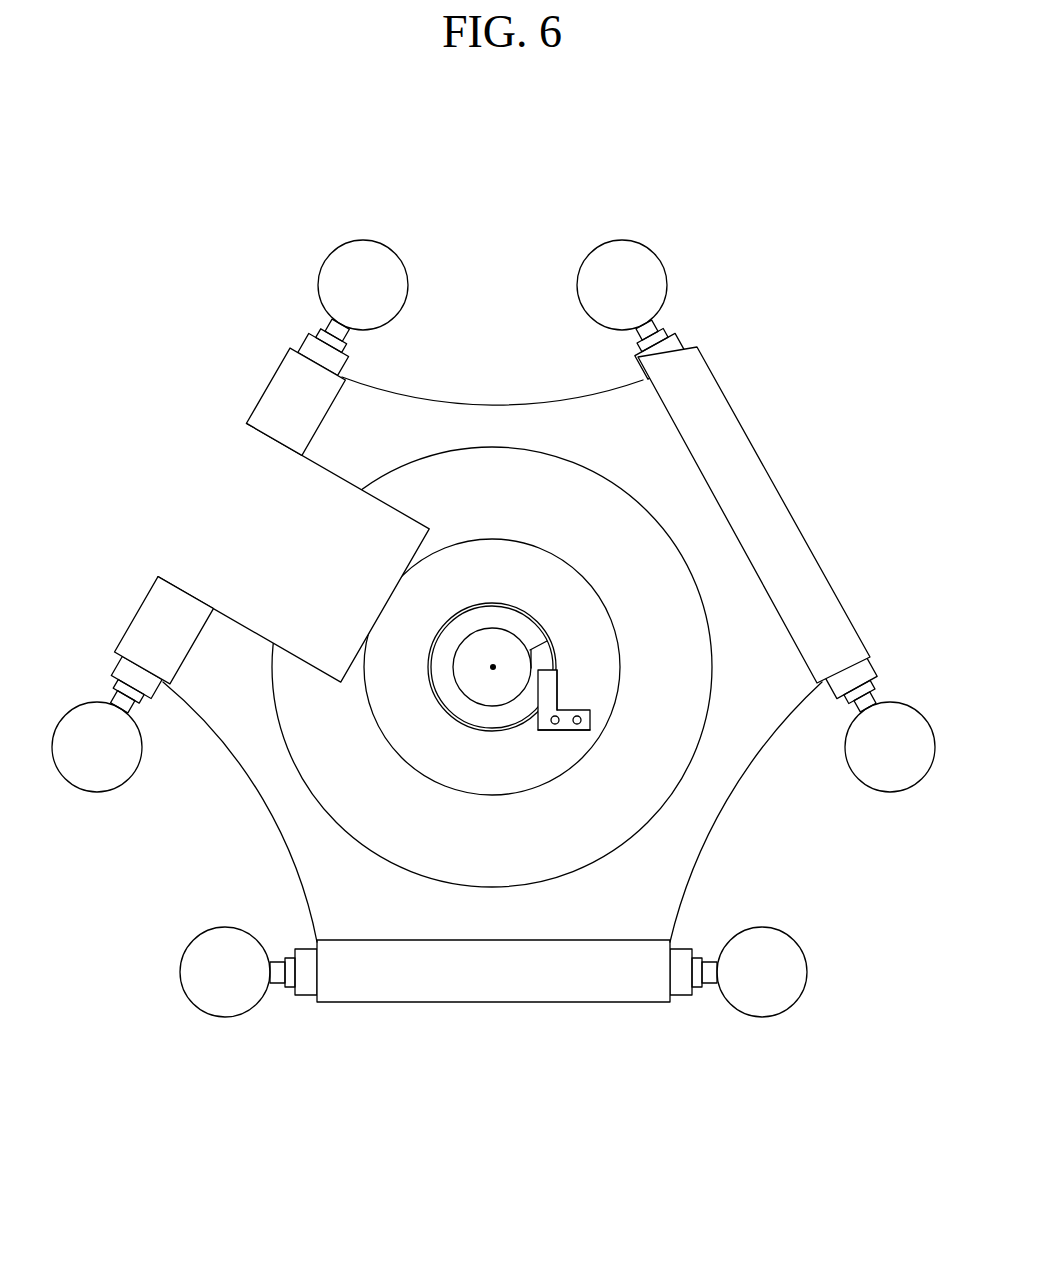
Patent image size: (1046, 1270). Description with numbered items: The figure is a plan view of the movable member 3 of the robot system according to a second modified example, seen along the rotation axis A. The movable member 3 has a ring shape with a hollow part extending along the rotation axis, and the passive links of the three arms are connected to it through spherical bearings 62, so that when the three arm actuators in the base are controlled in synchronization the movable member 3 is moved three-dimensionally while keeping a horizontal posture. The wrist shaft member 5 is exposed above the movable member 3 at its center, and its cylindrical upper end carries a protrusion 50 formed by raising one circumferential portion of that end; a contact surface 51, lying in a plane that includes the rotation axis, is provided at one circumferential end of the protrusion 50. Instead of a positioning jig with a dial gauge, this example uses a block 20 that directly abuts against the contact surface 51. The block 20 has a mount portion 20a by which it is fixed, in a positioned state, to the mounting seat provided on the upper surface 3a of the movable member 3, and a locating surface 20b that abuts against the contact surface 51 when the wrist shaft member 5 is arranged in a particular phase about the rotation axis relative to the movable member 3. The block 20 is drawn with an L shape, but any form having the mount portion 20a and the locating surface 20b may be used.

The movable member 3 is at (745, 430).
The upper surface 3a is at (407, 628).
The wrist shaft member 5 is at (448, 697).
The block 20 is at (606, 773).
The mount portion 20a is at (565, 731).
The locating surface 20b is at (557, 657).
The protrusion 50 is at (532, 638).
The contact surface 51 is at (557, 693).
The spherical bearings 62 is at (364, 240).